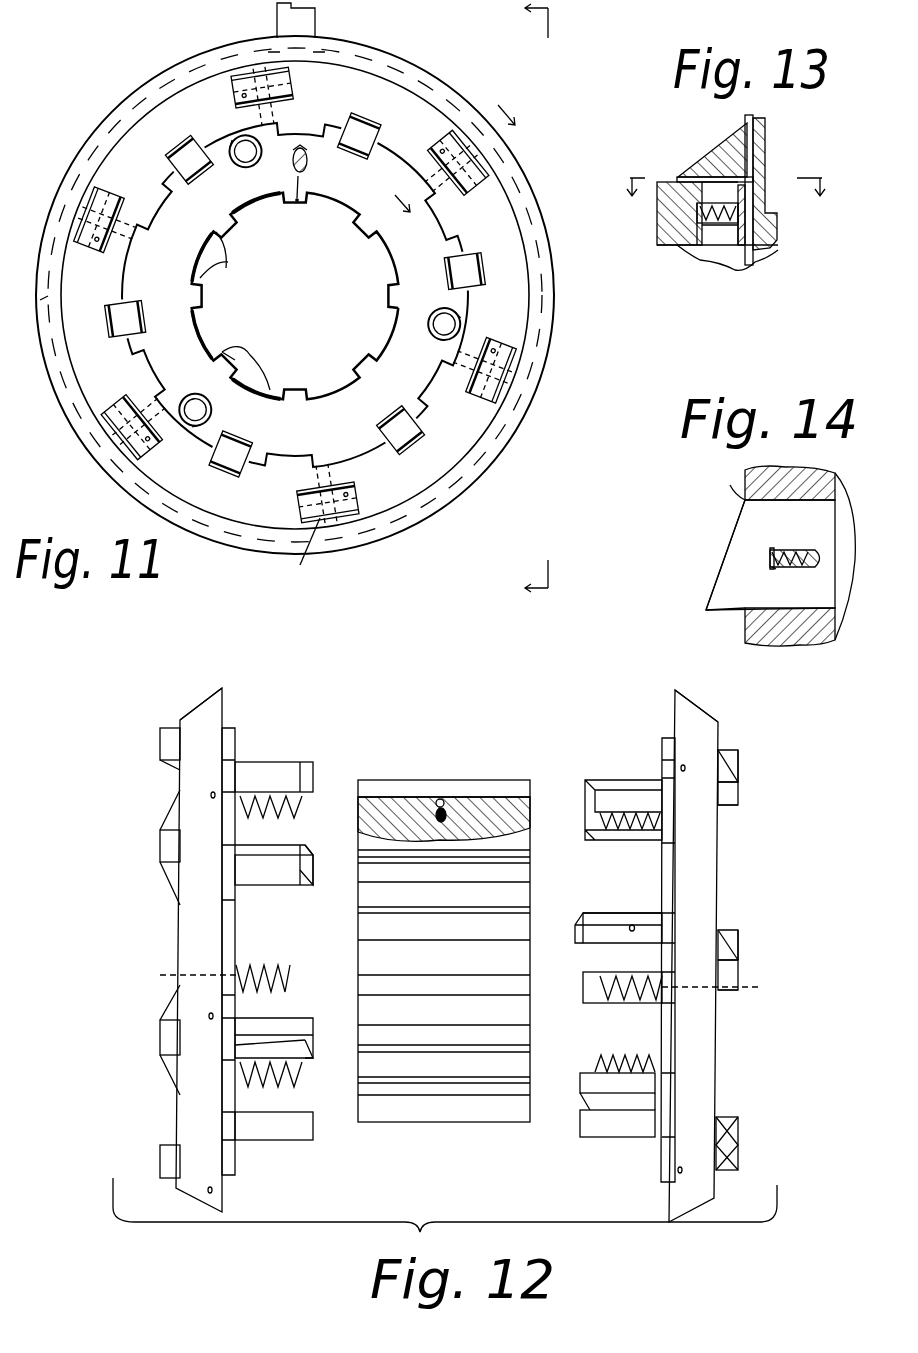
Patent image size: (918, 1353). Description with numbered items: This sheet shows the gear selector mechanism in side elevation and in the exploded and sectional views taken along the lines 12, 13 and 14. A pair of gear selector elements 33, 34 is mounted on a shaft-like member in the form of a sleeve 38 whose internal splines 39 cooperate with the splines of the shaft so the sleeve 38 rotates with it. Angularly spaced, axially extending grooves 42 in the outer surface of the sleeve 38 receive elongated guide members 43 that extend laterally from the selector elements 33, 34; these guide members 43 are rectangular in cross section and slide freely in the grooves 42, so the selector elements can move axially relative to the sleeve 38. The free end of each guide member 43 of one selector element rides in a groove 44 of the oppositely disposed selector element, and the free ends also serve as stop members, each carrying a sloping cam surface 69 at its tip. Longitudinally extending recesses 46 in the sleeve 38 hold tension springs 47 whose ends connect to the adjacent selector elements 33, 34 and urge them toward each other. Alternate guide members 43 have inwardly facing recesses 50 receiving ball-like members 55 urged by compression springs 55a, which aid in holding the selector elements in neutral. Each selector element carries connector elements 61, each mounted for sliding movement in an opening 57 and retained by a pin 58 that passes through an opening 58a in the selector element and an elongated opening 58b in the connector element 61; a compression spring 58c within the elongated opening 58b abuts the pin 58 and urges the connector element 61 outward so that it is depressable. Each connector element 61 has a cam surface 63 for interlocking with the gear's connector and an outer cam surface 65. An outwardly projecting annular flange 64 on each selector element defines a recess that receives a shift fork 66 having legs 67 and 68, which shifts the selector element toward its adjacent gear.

In FIG. 11, the section line 12— 12 is at (519, 297).
In FIG. 11, the section line 13— 13 is at (440, 147).
In FIG. 13, the section line 14— 14 is at (726, 202).
In FIG. 11, the gear selector element 33 is at (508, 432).
In FIG. 13, the gear selector element 33 is at (680, 160).
In FIG. 14, the gear selector element 33 is at (820, 645).
In FIG. 12, the gear selector element 33 is at (190, 1195).
In FIG. 12, the gear selector element 34 is at (700, 1212).
In FIG. 11, the sleeve 38 is at (335, 197).
In FIG. 12, the sleeve 38 is at (450, 778).
In FIG. 11, the internal splines 39 is at (237, 296).
In FIG. 11, the grooves 42 is at (185, 182).
In FIG. 11, the elongated guide members 43 is at (190, 150).
In FIG. 12, the elongated guide members 43 is at (260, 762).
In FIG. 11, the grooves 44 is at (178, 165).
In FIG. 11, the recesses 46 is at (244, 165).
In FIG. 12, the tension springs 47 is at (300, 812).
In FIG. 12, the recesses 50 is at (631, 925).
In FIG. 11, the ball-like members 55 is at (303, 146).
In FIG. 12, the ball-like members 55 is at (437, 800).
In FIG. 11, the compression springs 55a is at (278, 202).
In FIG. 12, the compression springs 55a is at (448, 810).
In FIG. 11, the opening 57 is at (301, 559).
In FIG. 13, the opening 57 is at (677, 179).
In FIG. 14, the opening 57 is at (752, 508).
In FIG. 11, the pin 58 is at (110, 255).
In FIG. 13, the pin 58 is at (745, 250).
In FIG. 14, the pin 58 is at (820, 560).
In FIG. 13, the opening 58a is at (745, 123).
In FIG. 13, the elongated opening 58b is at (732, 250).
In FIG. 14, the elongated opening 58b is at (786, 568).
In FIG. 13, the compression spring 58c is at (708, 246).
In FIG. 14, the compression spring 58c is at (788, 550).
In FIG. 11, the connector element 61 is at (250, 75).
In FIG. 13, the connector element 61 is at (655, 245).
In FIG. 14, the connector element 61 is at (712, 594).
In FIG. 12, the connector element 61 is at (168, 730).
In FIG. 14, the cam surface 63 is at (712, 622).
In FIG. 12, the cam surface 63 is at (165, 758).
In FIG. 13, the annular flange 64 is at (755, 118).
In FIG. 12, the annular flange 64 is at (208, 700).
In FIG. 14, the cam surface 65 is at (727, 540).
In FIG. 12, the cam surface 65 is at (740, 752).
In FIG. 11, the shift fork 66 is at (318, 19).
In FIG. 11, the leg 67 is at (545, 283).
In FIG. 11, the leg 68 is at (48, 338).
In FIG. 12, the sloping cam surface 69 is at (314, 775).